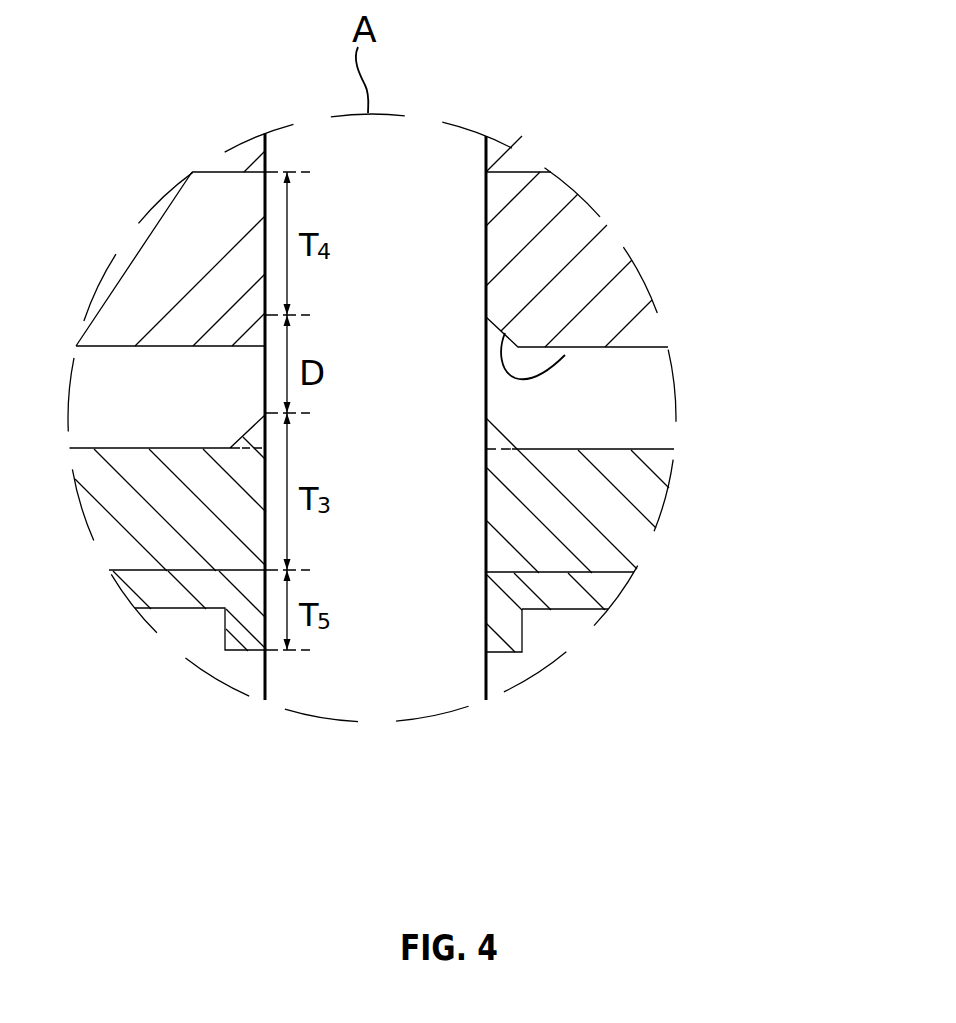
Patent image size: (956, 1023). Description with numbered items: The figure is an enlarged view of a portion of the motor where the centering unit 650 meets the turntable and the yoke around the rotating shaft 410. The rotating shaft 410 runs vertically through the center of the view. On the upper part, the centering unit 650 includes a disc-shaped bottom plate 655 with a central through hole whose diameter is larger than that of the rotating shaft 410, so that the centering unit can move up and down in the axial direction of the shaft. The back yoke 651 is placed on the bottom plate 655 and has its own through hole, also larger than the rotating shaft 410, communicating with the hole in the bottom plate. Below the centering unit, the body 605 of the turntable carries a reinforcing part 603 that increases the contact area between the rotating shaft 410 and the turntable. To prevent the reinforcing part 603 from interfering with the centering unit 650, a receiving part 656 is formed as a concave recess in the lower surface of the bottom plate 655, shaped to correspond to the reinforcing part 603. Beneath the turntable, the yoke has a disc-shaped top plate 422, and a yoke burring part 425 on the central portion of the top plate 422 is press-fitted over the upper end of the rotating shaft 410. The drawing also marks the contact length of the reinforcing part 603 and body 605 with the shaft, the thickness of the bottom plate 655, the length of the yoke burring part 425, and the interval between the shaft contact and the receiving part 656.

The rotating shaft 410 is at (430, 680).
The back yoke 651 is at (243, 158).
The bottom plate 655 is at (588, 215).
The centering unit 650 is at (633, 236).
The receiving part 656 is at (565, 355).
The reinforcing part 603 is at (503, 442).
The body 605 is at (676, 501).
The top plate 422 is at (630, 591).
The yoke burring part 425 is at (510, 630).